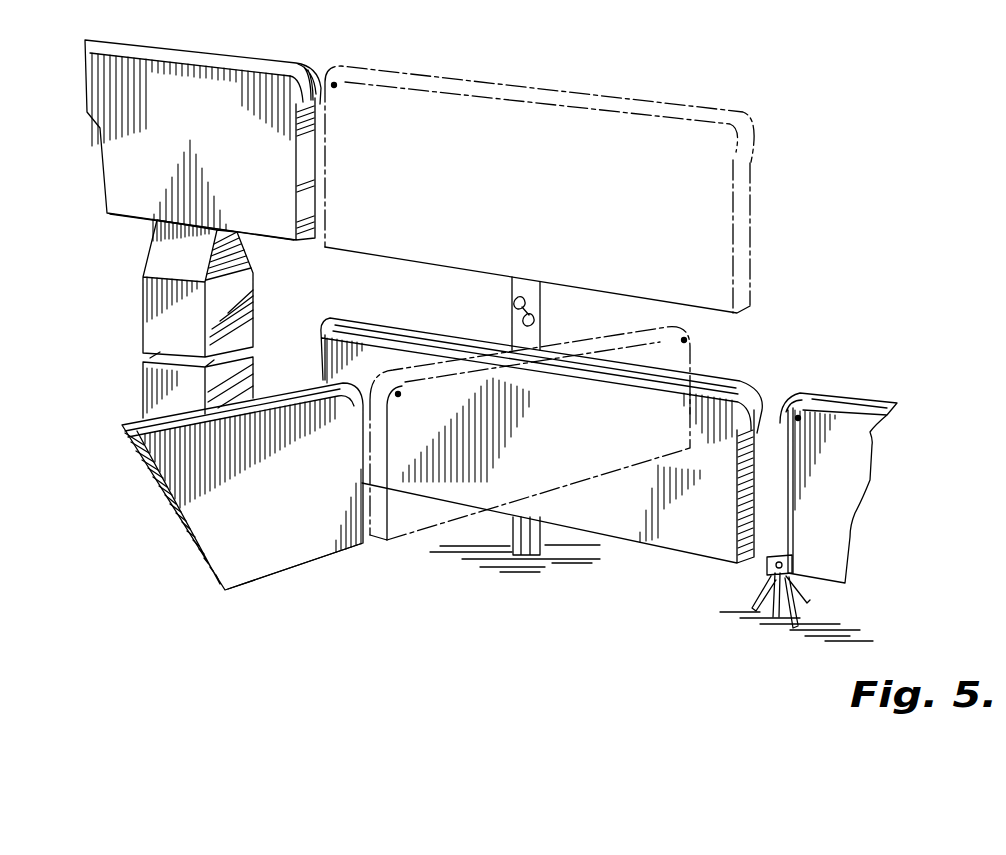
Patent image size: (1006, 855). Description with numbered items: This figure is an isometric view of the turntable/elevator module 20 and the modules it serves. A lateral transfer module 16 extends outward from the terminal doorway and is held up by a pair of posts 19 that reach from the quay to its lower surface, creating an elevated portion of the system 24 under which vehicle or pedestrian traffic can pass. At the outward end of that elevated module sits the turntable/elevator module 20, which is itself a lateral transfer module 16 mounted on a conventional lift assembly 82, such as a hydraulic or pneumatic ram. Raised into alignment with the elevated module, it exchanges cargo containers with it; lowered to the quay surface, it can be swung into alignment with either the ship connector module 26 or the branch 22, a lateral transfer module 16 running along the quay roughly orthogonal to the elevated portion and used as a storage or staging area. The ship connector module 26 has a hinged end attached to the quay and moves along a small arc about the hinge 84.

The lateral transfer module 16 is at (233, 193).
The posts 19 is at (259, 308).
The turntable/elevator conveyor module 20 is at (527, 458).
The branch of the modular system 22 is at (283, 572).
The elevated portion of the system 24 is at (137, 216).
The ship connector module 26 is at (838, 503).
The lift assembly 82 is at (541, 543).
The hinge 84 is at (768, 586).